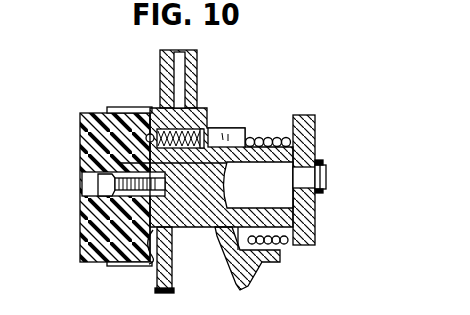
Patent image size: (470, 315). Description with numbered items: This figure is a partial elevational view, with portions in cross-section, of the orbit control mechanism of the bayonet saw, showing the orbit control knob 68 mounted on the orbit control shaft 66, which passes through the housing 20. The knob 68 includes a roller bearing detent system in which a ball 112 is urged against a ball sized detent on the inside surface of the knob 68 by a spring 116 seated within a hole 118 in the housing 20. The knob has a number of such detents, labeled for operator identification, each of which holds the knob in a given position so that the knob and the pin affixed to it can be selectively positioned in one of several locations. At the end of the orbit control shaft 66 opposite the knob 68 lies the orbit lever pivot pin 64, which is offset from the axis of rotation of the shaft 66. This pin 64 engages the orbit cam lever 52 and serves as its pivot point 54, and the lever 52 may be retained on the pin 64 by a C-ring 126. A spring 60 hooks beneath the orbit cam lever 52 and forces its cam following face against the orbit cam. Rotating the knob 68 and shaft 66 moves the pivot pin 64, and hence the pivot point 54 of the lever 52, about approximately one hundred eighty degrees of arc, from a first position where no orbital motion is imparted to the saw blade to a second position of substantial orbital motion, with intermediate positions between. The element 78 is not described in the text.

The support bar 78 is at (118, 147).
The housing 20 is at (158, 73).
The hole 118 is at (171, 138).
The spring 116 is at (200, 135).
The ball 112 is at (146, 136).
The spring 60 is at (254, 135).
The orbit cam lever 52 is at (304, 111).
The pivot point 54 is at (321, 156).
The orbit lever pivot pin 64 is at (326, 182).
The C-ring 126 is at (319, 190).
The orbit control shaft 66 is at (210, 222).
The orbit control knob 68 is at (88, 245).